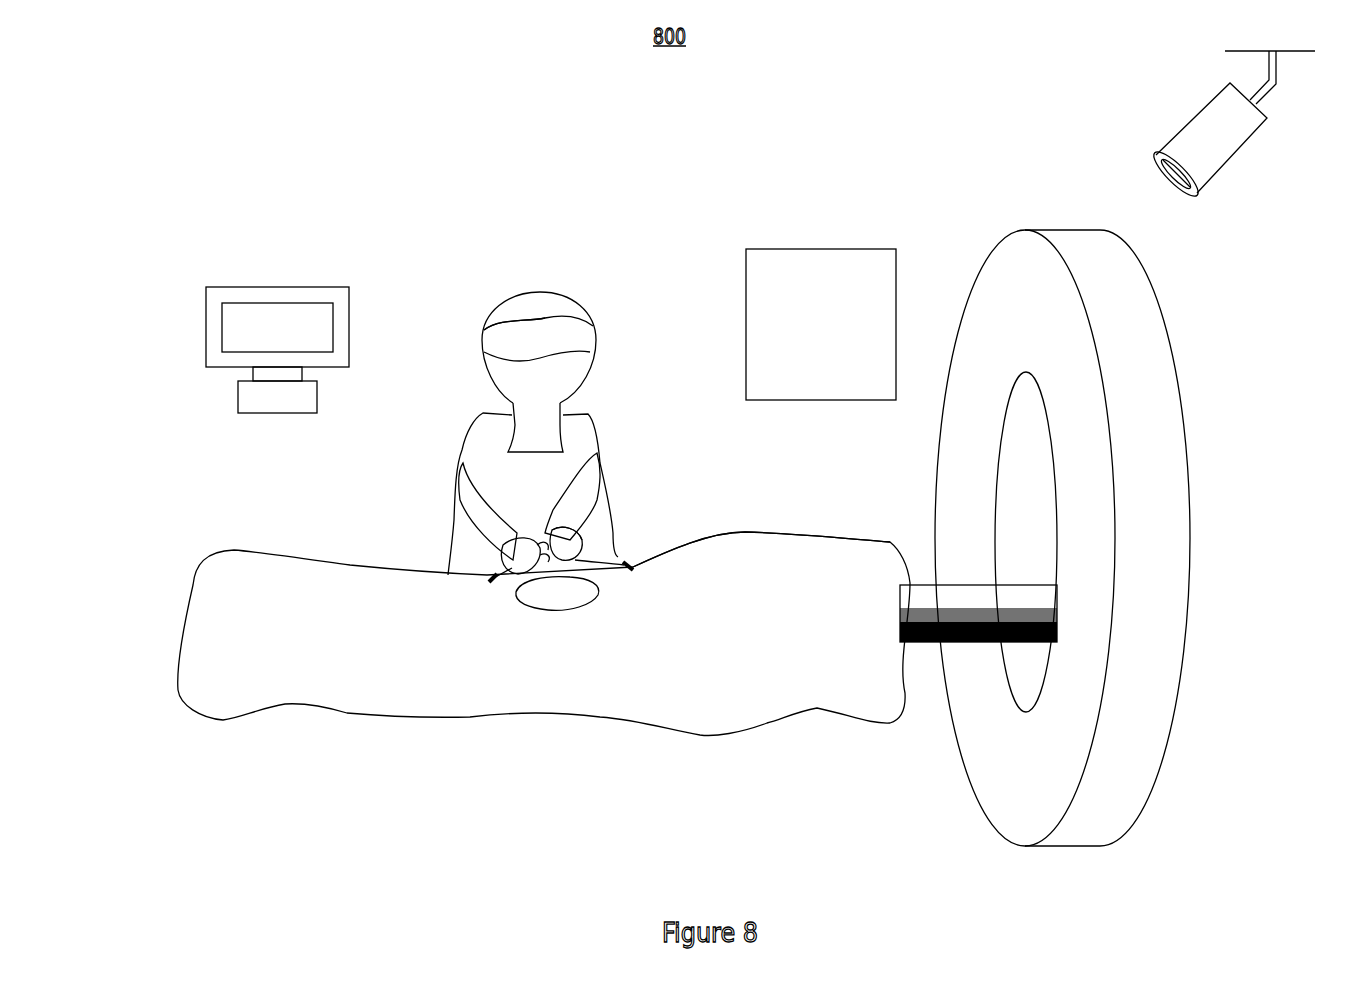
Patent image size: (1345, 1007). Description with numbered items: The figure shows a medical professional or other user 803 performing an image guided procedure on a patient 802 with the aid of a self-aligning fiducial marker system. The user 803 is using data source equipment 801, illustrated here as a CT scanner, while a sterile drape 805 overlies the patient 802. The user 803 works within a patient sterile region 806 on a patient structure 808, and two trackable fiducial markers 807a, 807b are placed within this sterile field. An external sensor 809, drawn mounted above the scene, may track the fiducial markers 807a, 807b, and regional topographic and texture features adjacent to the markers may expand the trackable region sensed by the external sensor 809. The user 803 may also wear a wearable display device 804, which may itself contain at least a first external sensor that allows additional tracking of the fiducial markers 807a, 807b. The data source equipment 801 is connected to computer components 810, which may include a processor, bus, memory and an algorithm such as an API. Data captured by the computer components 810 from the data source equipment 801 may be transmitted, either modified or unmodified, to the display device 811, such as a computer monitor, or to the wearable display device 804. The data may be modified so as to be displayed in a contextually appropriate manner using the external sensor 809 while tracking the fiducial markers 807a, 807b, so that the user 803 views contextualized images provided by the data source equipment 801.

The data source equipment 801 is at (1069, 228).
The patient 802 is at (828, 620).
The user 803 is at (442, 336).
The wearable display device 804 is at (617, 340).
The sterile drape 805 is at (870, 538).
The patient sterile region 806 is at (575, 562).
The fiducial marker 807a is at (632, 590).
The fiducial marker 807b is at (476, 582).
The patient structure 808 is at (565, 622).
The external sensor 809 is at (1260, 152).
The computer components 810 is at (818, 242).
The display device 811 is at (190, 318).